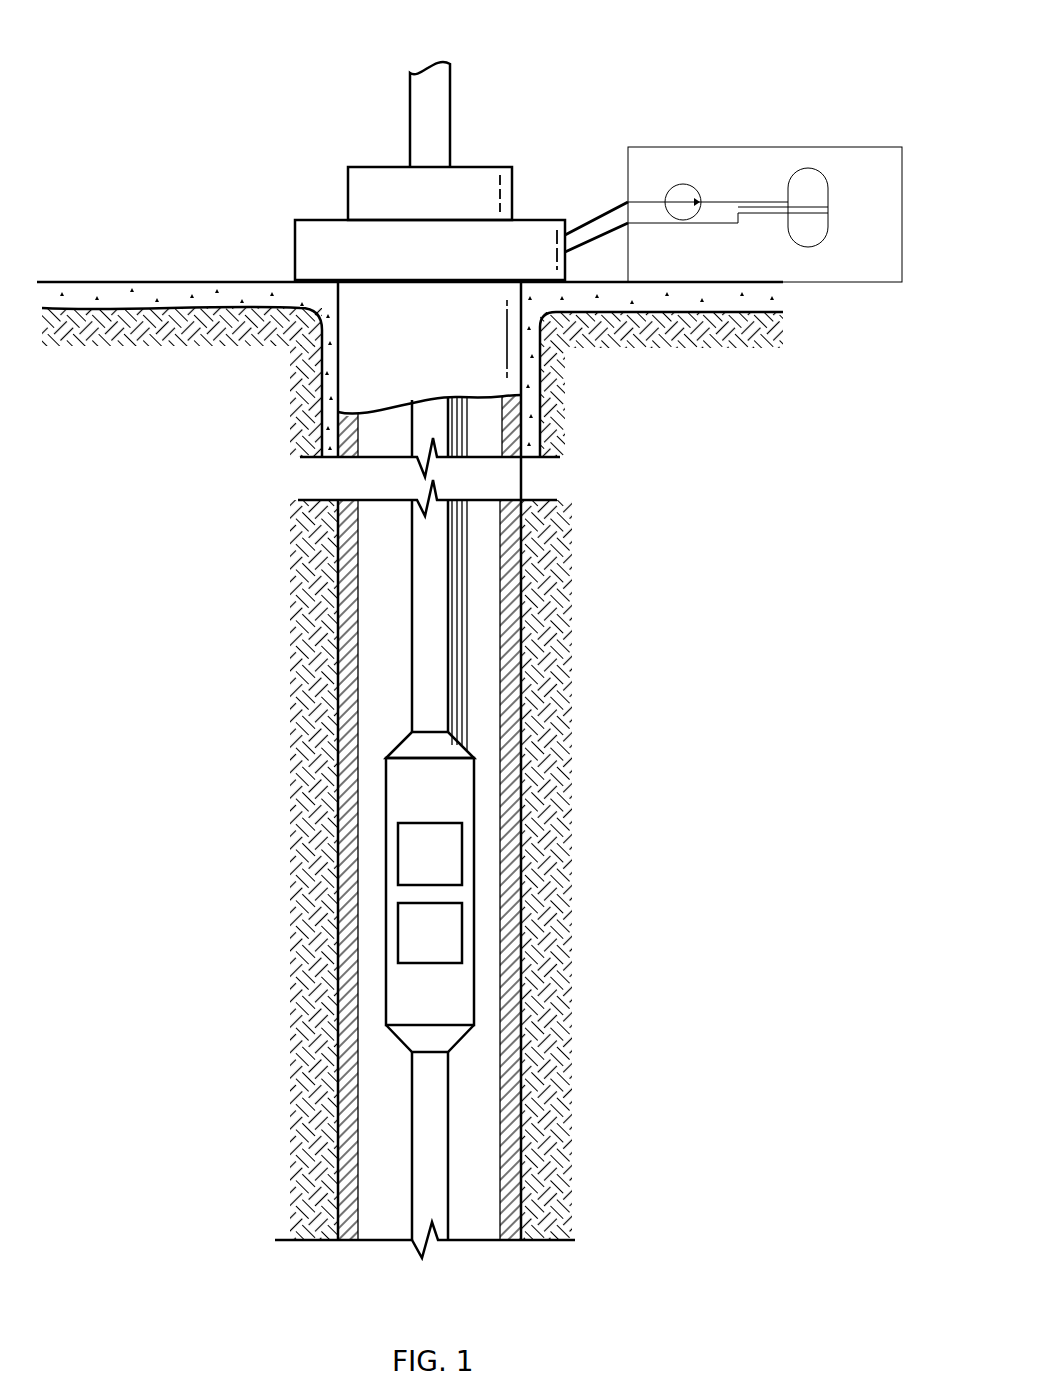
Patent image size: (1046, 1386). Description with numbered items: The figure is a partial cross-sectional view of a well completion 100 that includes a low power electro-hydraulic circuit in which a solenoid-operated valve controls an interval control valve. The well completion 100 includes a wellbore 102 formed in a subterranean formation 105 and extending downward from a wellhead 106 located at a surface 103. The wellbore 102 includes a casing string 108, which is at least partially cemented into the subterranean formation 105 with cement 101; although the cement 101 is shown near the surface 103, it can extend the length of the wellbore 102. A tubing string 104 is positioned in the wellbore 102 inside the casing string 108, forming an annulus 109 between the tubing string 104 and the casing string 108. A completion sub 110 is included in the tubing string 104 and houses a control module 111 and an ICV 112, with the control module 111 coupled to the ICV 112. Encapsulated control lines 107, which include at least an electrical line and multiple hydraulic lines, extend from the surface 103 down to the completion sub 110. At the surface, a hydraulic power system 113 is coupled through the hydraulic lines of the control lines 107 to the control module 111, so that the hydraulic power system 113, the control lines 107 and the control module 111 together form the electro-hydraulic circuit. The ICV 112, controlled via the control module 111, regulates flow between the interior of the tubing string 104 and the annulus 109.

The well completion 100 is at (116, 28).
The cement 101 is at (203, 282).
The wellbore 102 is at (525, 571).
The surface 103 is at (152, 282).
The tubing string 104 is at (408, 553).
The subterranean formation 105 is at (178, 428).
The wellhead 106 is at (547, 221).
The encapsulated control lines 107 is at (468, 443).
The casing string 108 is at (348, 634).
The annulus 109 is at (483, 797).
The completion sub 110 is at (402, 746).
The control module 111 is at (412, 866).
The ICV 112 is at (412, 945).
The hydraulic power system 113 is at (768, 146).